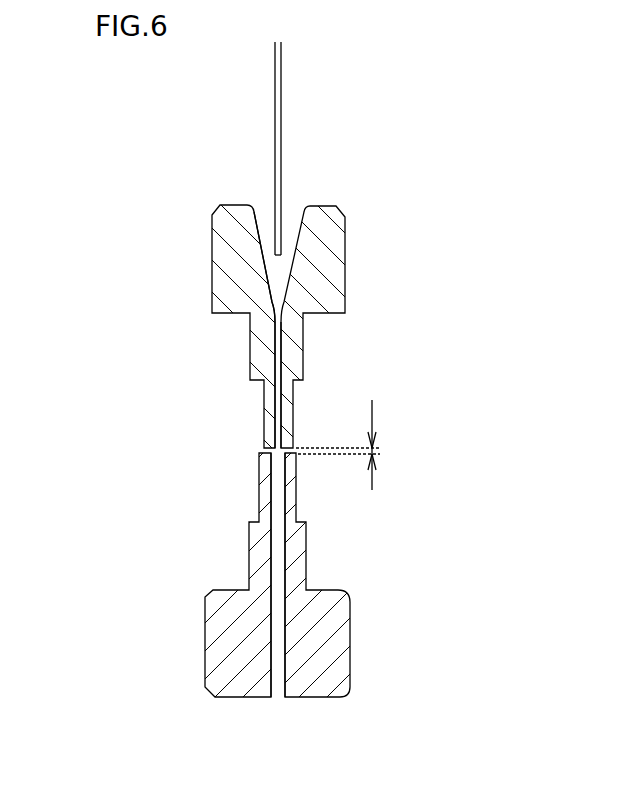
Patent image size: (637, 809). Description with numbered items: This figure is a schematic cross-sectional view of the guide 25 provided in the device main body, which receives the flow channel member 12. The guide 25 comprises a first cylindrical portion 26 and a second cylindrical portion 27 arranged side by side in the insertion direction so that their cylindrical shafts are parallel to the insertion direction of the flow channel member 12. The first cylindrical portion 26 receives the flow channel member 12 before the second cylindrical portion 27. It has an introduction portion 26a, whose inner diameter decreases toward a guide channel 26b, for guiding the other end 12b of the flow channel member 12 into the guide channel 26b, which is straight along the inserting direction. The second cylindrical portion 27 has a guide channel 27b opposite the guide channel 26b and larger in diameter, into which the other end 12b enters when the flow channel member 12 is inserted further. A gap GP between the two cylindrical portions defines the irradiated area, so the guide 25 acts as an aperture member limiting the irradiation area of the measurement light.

The flow channel member 12 is at (275, 101).
The other end of the flow channel member 12b is at (288, 255).
The guide 25 is at (389, 166).
The first cylindrical portion 26 is at (346, 262).
The introduction portion 26a is at (262, 270).
The guide channel of the first cylindrical portion 26b is at (277, 362).
The second cylindrical portion 27 is at (350, 638).
The guide channel of the second cylindrical portion 27b is at (267, 547).